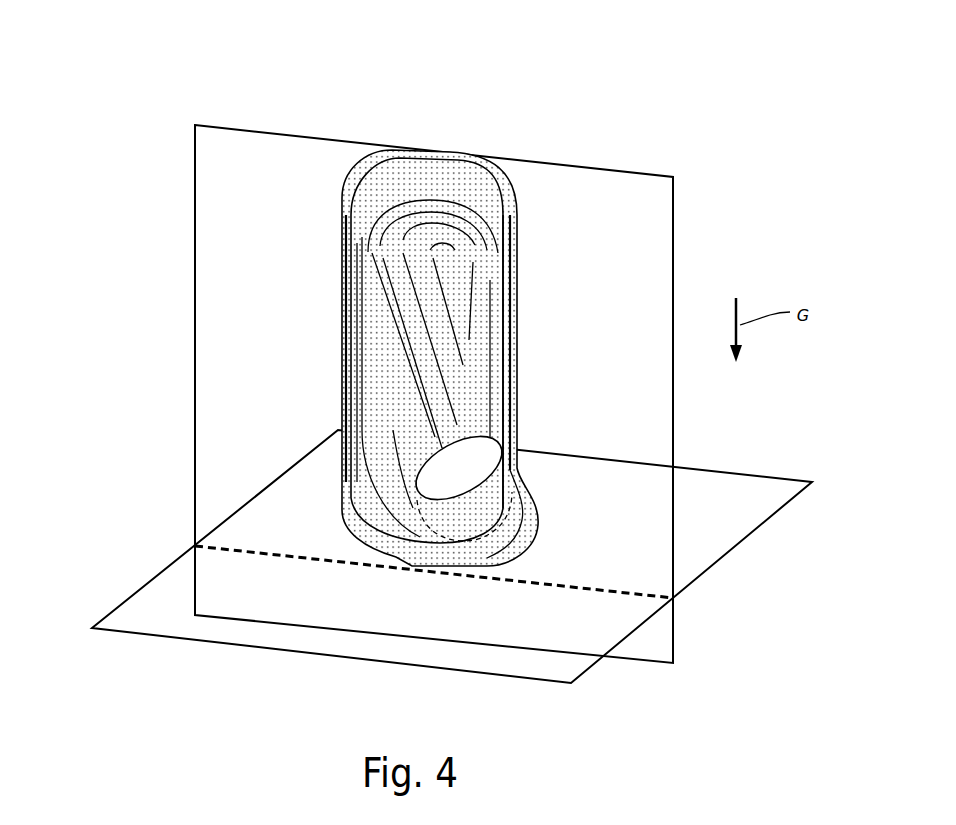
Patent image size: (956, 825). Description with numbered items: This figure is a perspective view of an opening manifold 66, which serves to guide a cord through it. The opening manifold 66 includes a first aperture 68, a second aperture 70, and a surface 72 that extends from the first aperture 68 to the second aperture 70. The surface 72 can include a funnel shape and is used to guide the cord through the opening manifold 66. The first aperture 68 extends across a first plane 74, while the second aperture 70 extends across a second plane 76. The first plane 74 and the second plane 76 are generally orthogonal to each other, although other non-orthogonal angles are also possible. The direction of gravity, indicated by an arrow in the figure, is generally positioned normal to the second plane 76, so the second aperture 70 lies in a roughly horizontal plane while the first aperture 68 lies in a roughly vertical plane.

The opening manifold 66 is at (400, 358).
The first aperture 68 is at (427, 358).
The second aperture 70 is at (413, 508).
The surface 72 is at (387, 355).
The first plane 74 is at (673, 200).
The second plane 76 is at (731, 470).